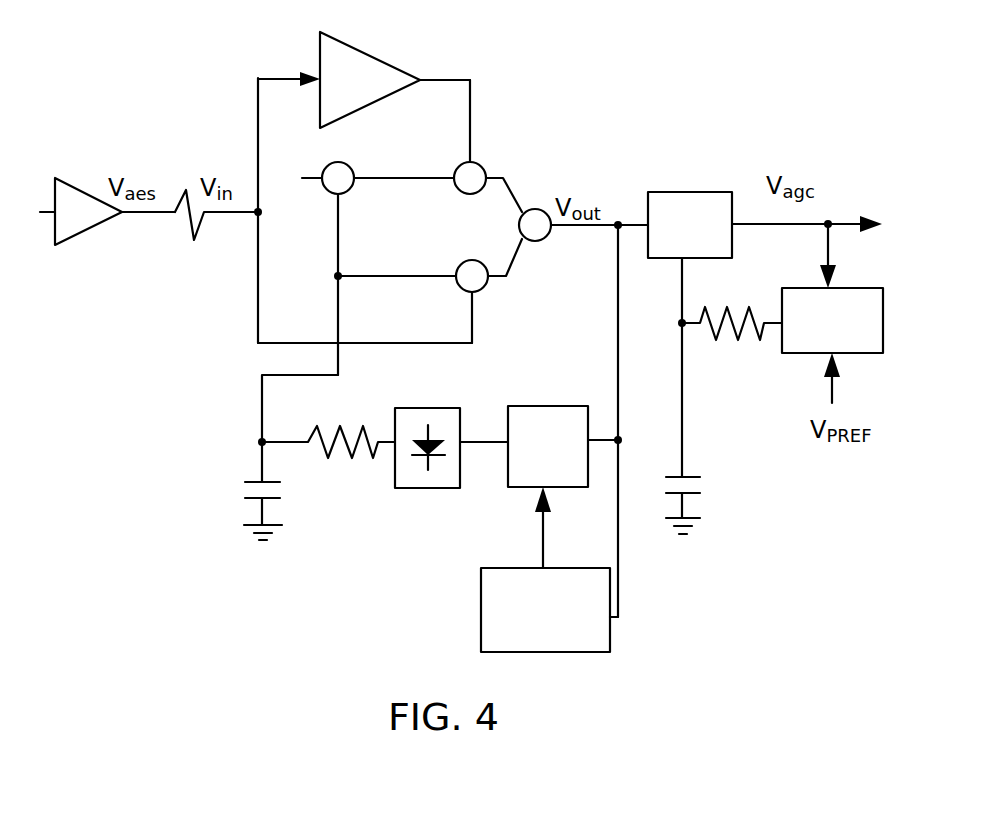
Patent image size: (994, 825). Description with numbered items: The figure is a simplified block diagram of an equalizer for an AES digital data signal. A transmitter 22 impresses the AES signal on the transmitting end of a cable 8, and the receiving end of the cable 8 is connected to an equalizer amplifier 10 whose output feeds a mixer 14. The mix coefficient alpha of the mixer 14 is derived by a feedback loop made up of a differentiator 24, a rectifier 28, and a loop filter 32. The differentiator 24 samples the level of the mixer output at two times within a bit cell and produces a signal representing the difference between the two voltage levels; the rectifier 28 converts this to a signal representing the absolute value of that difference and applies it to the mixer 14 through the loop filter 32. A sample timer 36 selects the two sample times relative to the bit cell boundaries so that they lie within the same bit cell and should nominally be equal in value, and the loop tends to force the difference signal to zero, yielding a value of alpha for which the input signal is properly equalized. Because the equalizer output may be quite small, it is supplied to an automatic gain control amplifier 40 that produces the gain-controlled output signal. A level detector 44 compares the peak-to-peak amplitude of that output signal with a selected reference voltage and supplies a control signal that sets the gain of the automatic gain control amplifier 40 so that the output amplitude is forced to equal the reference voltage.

The cable 8 is at (187, 230).
The equalizer amplifier 10 is at (353, 46).
The mixer 14 is at (542, 152).
The transmitter 22 is at (73, 228).
The differentiator 24 is at (540, 406).
The rectifier 28 is at (415, 408).
The loop filter 32 is at (212, 442).
The sample timer 36 is at (562, 653).
The automatic gain control amplifier 40 is at (697, 192).
The level detector 44 is at (800, 357).